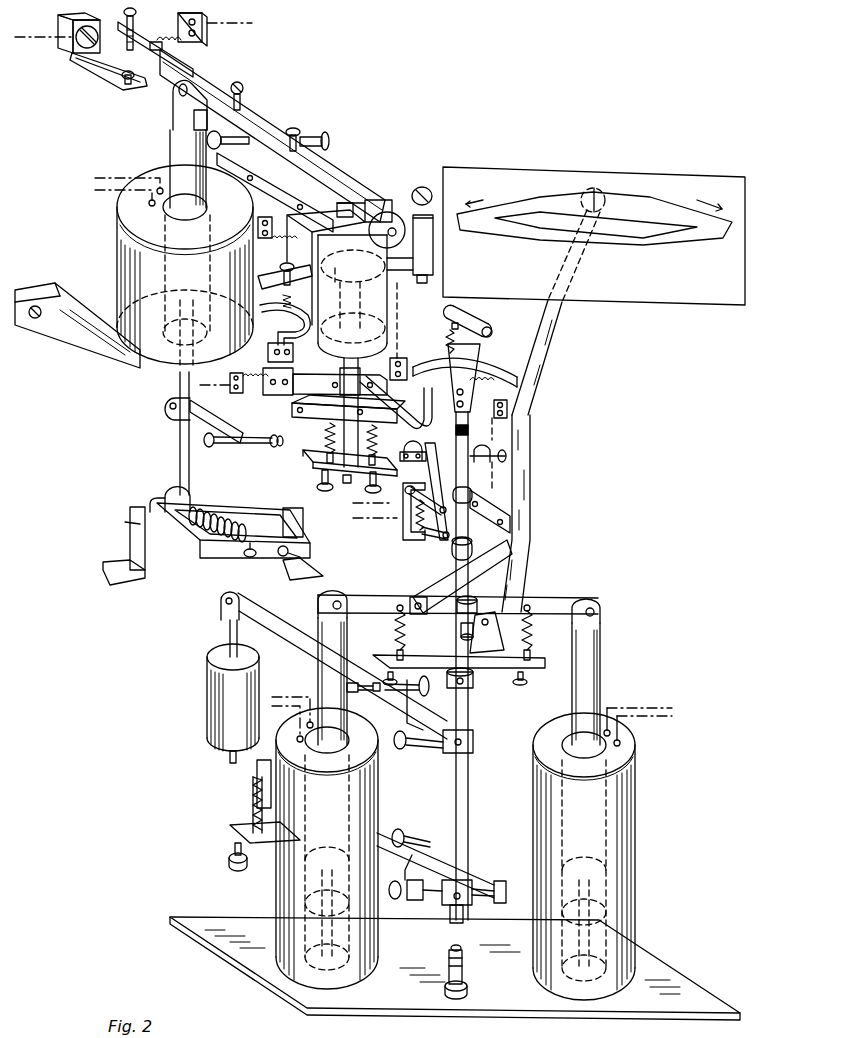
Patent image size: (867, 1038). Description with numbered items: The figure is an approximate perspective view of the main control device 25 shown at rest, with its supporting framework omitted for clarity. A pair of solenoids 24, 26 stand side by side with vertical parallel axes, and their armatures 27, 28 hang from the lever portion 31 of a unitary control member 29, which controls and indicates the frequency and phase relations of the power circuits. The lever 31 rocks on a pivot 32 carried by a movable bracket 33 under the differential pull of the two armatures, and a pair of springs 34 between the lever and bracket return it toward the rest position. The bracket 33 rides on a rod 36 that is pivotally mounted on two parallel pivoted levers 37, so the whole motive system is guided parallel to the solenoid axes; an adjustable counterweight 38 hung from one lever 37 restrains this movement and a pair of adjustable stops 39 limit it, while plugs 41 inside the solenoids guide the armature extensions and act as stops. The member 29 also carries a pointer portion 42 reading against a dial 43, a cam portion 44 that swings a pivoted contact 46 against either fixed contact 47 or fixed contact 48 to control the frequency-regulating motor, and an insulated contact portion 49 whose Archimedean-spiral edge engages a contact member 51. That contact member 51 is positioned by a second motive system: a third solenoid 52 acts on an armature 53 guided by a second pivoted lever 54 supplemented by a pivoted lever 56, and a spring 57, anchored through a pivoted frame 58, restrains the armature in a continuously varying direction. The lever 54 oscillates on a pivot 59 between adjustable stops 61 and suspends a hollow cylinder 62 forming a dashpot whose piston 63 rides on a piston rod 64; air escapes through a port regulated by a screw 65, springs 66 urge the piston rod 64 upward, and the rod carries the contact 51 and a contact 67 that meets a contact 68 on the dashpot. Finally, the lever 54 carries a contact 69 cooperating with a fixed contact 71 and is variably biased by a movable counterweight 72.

The solenoid 24 is at (380, 815).
The essential device 25 is at (606, 499).
The solenoid 26 is at (635, 842).
The armature 27 is at (322, 672).
The armature 28 is at (600, 662).
The unitary control member 29 is at (522, 574).
The lever portion 31 is at (372, 594).
The pivot 32 is at (466, 600).
The movable bracket 33 is at (492, 640).
The springs 34 is at (397, 628).
The rod 36 is at (464, 835).
The parallel pivoted levers 37 is at (280, 635).
The adjustable counterweight 38 is at (207, 695).
The adjustable stops 39 is at (252, 800).
The plugs 41 is at (380, 940).
The pointer portion 42 is at (555, 338).
The dial 43 is at (648, 296).
The cam portion 44 is at (437, 540).
The pivoted contact 46 is at (446, 470).
The fixed contact 47 is at (418, 450).
The fixed contact 48 is at (478, 446).
The contact portion 49 is at (493, 364).
The contact member 51 is at (480, 347).
The third solenoid 52 is at (119, 258).
The armature 53 is at (174, 144).
The second pivoted lever 54 is at (213, 91).
The pivoted lever 56 is at (232, 430).
The spring 57 is at (206, 515).
The pivoted frame 58 is at (184, 540).
The pivot 59 is at (250, 133).
The adjustable stops 61 is at (244, 91).
The hollow cylinder 62 is at (402, 300).
The piston 63 is at (387, 297).
The piston rod 64 is at (345, 484).
The screw 65 is at (414, 204).
The springs 66 is at (328, 436).
The contact 67 is at (303, 338).
The contact 68 is at (282, 295).
The contact 69 is at (128, 47).
The fixed contact 71 is at (102, 74).
The movable counterweight 72 is at (374, 236).